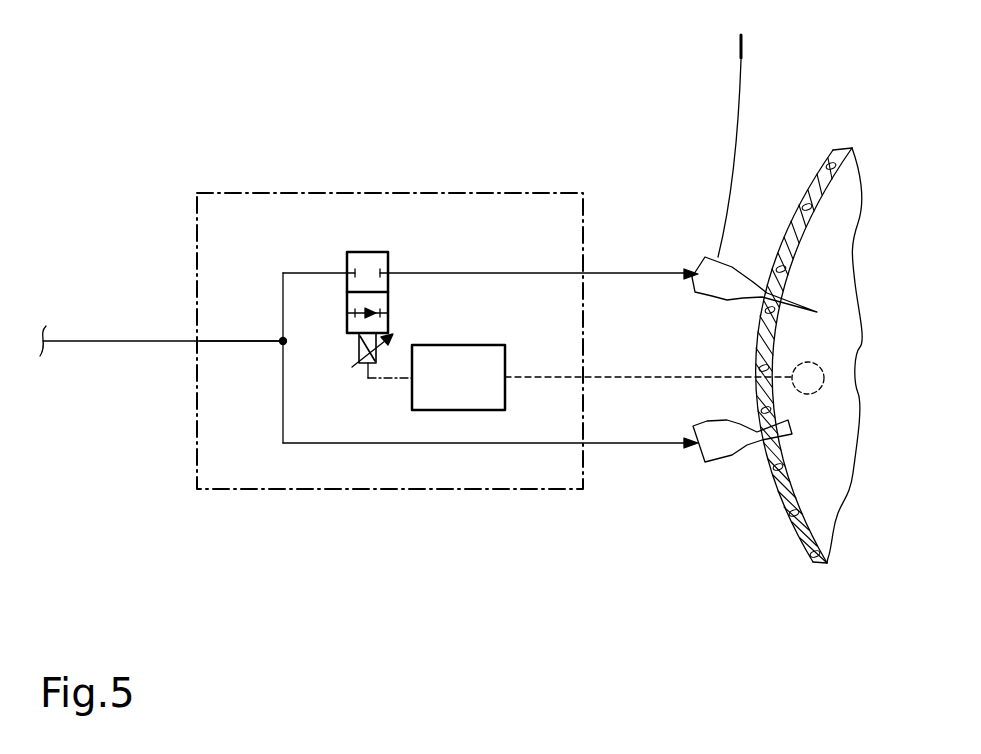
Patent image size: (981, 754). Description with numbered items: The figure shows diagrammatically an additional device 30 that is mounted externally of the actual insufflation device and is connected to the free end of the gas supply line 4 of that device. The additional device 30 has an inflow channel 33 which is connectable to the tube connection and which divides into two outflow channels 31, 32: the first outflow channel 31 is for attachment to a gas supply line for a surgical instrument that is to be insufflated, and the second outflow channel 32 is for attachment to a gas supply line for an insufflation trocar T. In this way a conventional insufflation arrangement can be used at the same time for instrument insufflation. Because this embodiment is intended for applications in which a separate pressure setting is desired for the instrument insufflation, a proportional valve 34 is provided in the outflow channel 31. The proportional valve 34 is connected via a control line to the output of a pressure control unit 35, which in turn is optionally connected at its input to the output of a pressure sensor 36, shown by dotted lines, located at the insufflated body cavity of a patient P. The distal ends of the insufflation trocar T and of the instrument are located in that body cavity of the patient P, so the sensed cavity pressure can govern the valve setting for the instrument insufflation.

The gas supply line 4 is at (92, 341).
The additional device 30 is at (550, 489).
The outflow channel 31 is at (555, 273).
The outflow channel 32 is at (605, 447).
The inflow channel 33 is at (254, 339).
The proportional valve 34 is at (368, 252).
The pressure control unit 35 is at (460, 345).
The pressure sensor 36 is at (810, 394).
The insufflation trocar T is at (713, 461).
The patient P is at (796, 556).